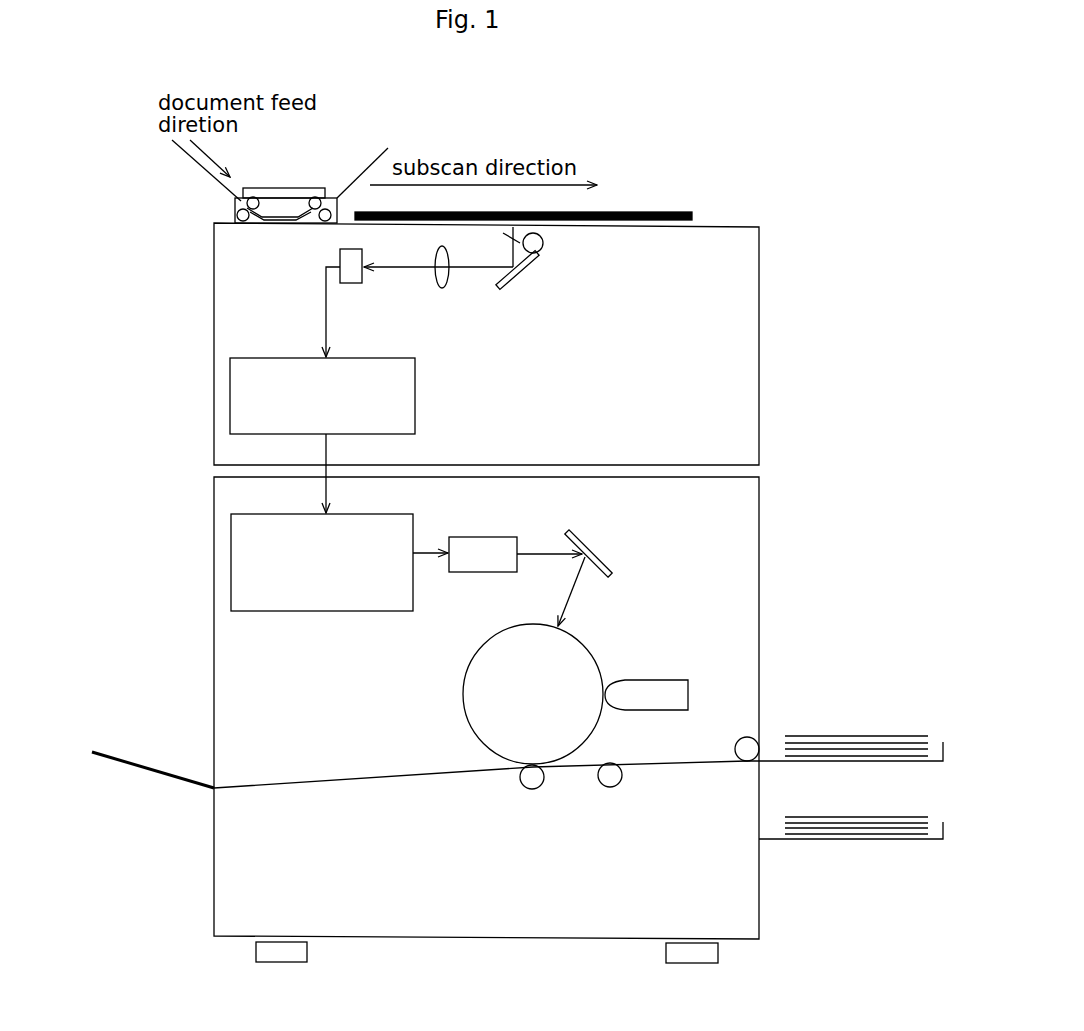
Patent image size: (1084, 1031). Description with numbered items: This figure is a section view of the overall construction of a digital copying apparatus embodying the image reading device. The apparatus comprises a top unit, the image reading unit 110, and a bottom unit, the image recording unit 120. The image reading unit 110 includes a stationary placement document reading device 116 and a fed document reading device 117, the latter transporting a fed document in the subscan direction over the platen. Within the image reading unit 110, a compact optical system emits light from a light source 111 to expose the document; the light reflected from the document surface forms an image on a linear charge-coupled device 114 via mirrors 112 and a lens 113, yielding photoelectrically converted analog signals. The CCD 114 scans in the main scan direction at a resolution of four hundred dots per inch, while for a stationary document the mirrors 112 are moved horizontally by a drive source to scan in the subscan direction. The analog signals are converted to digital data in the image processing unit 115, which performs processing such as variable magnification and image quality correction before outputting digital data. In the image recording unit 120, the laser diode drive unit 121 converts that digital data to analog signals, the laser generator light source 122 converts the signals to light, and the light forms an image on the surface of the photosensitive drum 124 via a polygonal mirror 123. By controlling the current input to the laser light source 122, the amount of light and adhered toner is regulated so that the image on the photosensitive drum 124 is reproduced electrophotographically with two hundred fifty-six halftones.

The image reading unit 110 is at (759, 338).
The light source 111 is at (543, 246).
The mirrors 112 is at (532, 268).
The lens 113 is at (441, 288).
The linear charge-coupled device (CCD) 114 is at (340, 254).
The image processing unit 115 is at (415, 380).
The stationary placement document reading device 116 is at (688, 212).
The fed document reading device 117 is at (312, 180).
The image recording unit 120 is at (759, 533).
The laser diode drive unit 121 is at (413, 577).
The laser generator light source 122 is at (478, 537).
The polygonal mirror 123 is at (580, 537).
The photosensitive drum 124 is at (467, 663).